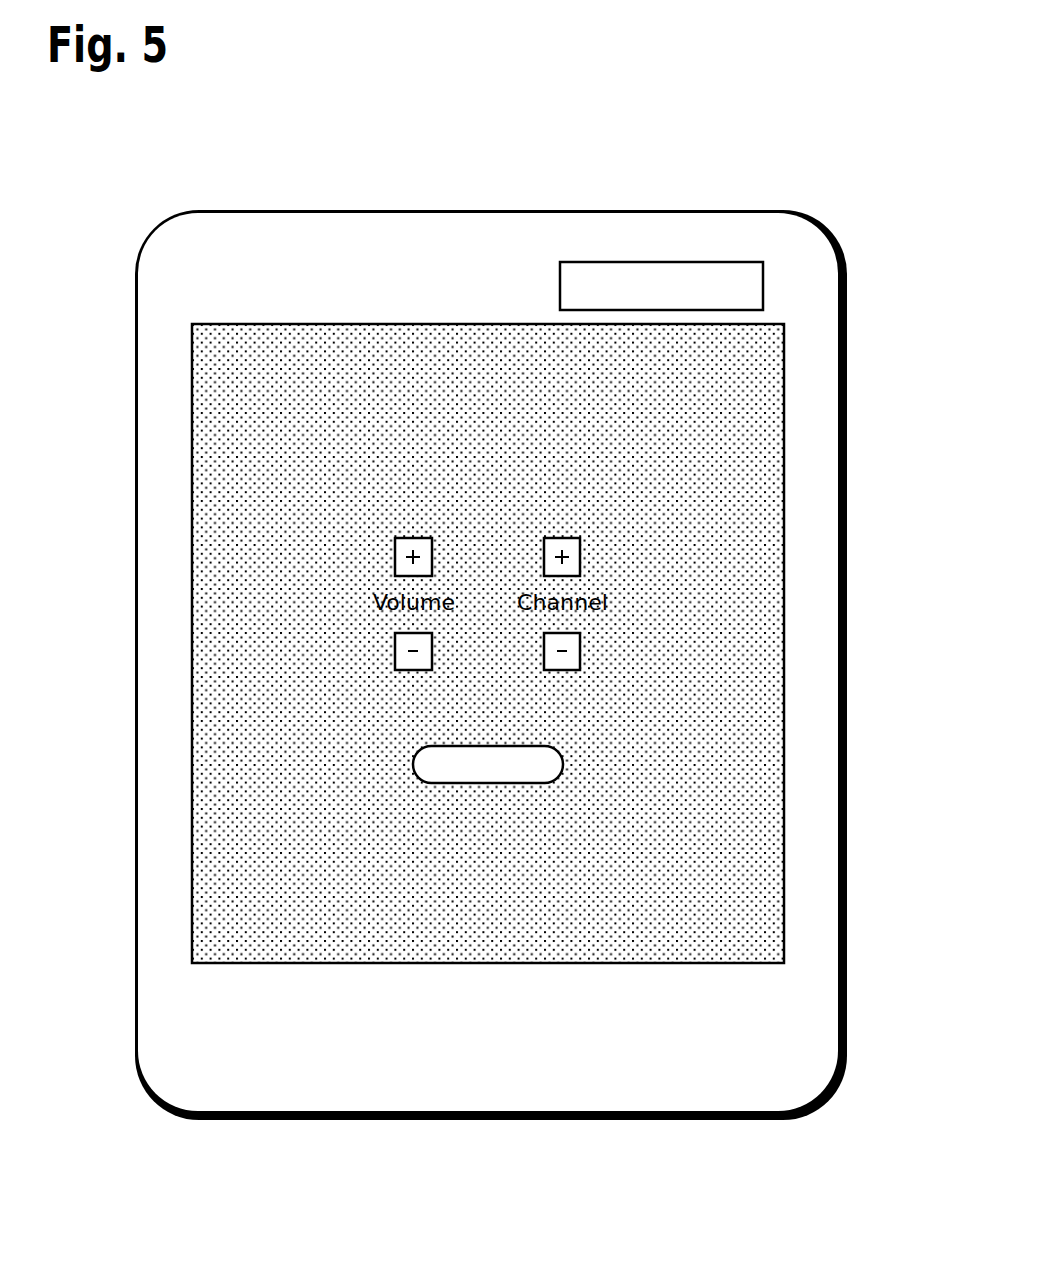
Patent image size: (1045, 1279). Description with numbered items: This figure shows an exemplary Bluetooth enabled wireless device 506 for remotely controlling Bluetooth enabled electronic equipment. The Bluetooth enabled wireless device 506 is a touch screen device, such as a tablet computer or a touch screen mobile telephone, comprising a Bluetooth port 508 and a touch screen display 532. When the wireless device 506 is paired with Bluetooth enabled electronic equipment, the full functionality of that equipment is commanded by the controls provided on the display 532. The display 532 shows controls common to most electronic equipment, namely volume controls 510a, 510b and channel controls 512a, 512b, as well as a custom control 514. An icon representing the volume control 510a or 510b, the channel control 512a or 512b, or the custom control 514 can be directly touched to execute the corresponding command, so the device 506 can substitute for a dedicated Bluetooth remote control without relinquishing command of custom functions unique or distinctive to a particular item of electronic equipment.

The Bluetooth enabled wireless device 506 is at (860, 103).
The Bluetooth port 508 is at (645, 262).
The touch screen display 532 is at (508, 360).
The volume control 510a is at (418, 538).
The volume control 510b is at (412, 670).
The channel control 512a is at (557, 538).
The channel control 512b is at (565, 670).
The custom control 514 is at (510, 746).